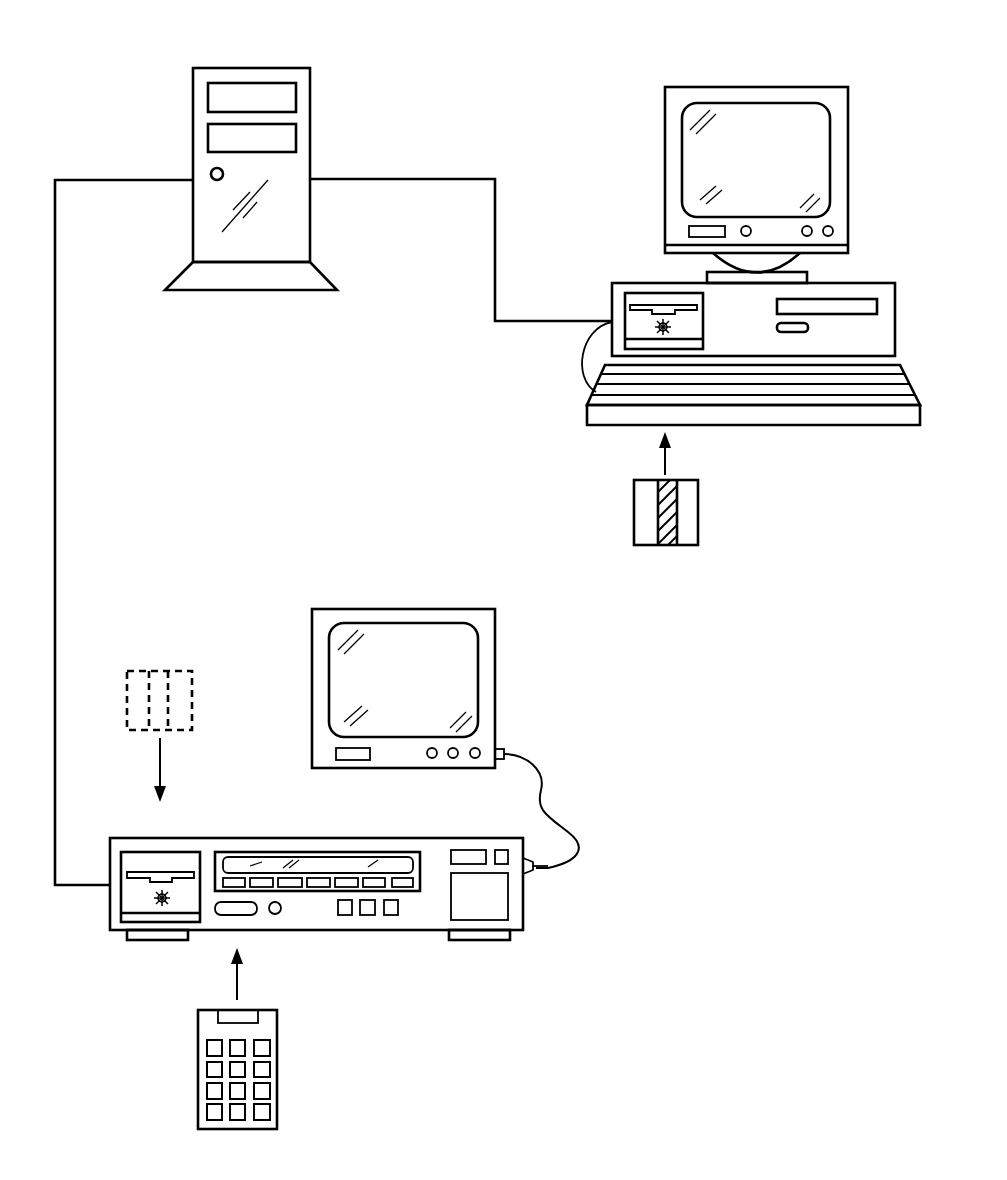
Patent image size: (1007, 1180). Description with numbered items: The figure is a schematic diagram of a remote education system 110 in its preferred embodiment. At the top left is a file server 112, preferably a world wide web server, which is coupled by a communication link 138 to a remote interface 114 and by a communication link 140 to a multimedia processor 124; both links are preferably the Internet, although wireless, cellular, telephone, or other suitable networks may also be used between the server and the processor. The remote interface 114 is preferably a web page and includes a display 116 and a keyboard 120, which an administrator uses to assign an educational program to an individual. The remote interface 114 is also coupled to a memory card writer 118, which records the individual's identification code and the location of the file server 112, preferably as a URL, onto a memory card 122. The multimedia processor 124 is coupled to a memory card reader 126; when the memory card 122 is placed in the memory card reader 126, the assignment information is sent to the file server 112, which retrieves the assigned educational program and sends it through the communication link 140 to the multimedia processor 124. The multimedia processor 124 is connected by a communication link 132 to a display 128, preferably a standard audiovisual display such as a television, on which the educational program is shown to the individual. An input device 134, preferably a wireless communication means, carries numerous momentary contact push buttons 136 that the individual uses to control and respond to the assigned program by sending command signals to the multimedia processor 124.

The system 110 is at (122, 92).
The file server 112 is at (310, 134).
The remote interface 114 is at (874, 280).
The display 116 is at (682, 162).
The memory card writer 118 is at (660, 304).
The keyboard 120 is at (757, 427).
The memory card 122 is at (634, 508).
The multimedia processor 124 is at (278, 838).
The memory card reader 126 is at (152, 870).
The display 128 is at (497, 678).
The communication link 132 is at (553, 813).
The input device 134 is at (278, 1026).
The momentary contact push buttons 136 is at (198, 1076).
The communication link 138 is at (493, 252).
The communication link 140 is at (57, 530).